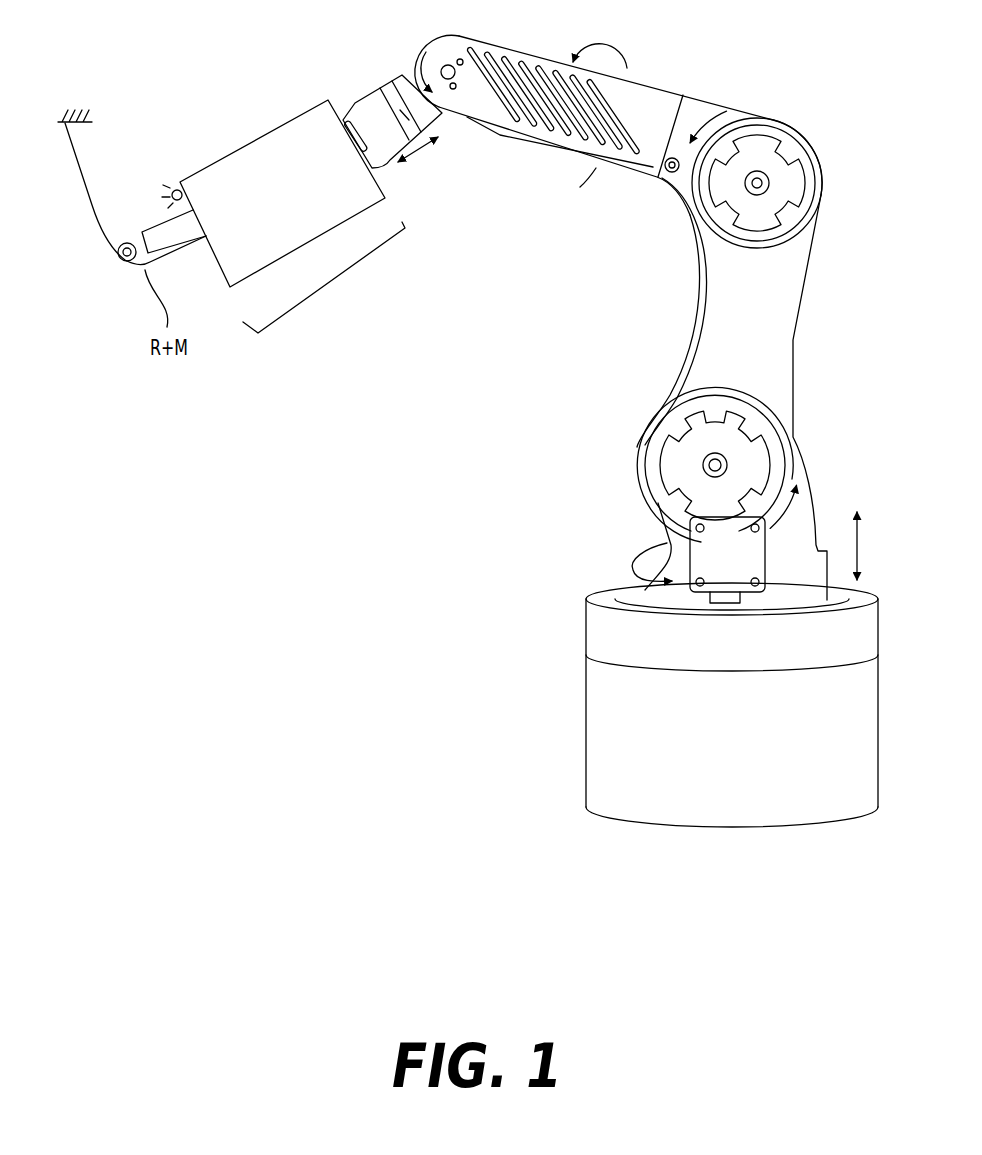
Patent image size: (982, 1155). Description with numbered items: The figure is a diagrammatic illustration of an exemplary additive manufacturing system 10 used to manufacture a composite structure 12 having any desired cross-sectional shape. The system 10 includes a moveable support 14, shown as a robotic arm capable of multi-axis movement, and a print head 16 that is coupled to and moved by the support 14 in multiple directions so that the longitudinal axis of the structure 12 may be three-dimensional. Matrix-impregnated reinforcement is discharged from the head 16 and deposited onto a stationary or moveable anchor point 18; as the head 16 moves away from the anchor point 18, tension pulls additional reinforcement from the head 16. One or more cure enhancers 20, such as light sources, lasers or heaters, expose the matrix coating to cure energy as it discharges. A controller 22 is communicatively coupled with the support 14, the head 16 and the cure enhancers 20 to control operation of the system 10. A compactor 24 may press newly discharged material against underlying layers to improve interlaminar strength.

The system 10 is at (447, 604).
The composite structure 12 is at (92, 208).
The moveable support 14 is at (756, 329).
The print head 16 is at (335, 287).
The anchor point 18 is at (90, 123).
The cure enhancer 20 is at (177, 190).
The controller 22 is at (739, 570).
The compactor 24 is at (125, 242).